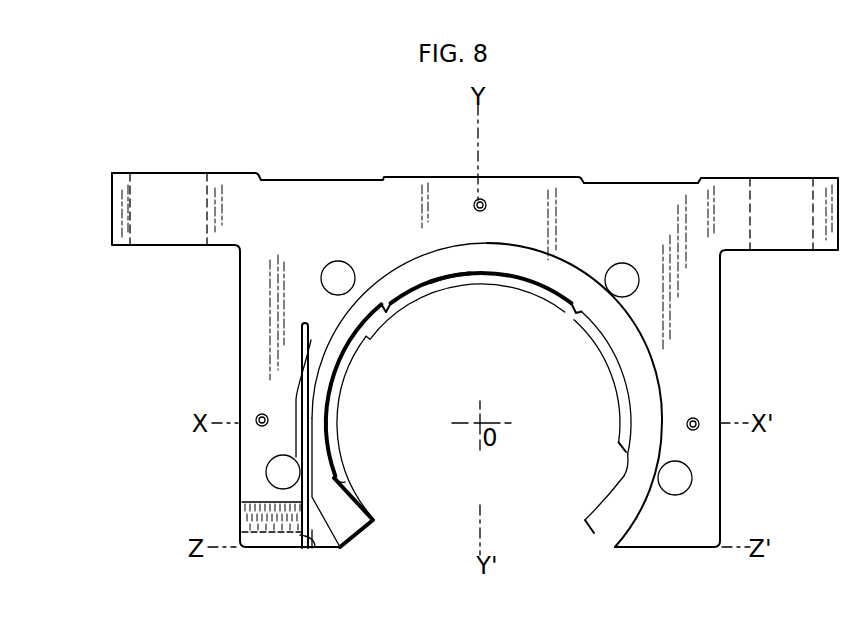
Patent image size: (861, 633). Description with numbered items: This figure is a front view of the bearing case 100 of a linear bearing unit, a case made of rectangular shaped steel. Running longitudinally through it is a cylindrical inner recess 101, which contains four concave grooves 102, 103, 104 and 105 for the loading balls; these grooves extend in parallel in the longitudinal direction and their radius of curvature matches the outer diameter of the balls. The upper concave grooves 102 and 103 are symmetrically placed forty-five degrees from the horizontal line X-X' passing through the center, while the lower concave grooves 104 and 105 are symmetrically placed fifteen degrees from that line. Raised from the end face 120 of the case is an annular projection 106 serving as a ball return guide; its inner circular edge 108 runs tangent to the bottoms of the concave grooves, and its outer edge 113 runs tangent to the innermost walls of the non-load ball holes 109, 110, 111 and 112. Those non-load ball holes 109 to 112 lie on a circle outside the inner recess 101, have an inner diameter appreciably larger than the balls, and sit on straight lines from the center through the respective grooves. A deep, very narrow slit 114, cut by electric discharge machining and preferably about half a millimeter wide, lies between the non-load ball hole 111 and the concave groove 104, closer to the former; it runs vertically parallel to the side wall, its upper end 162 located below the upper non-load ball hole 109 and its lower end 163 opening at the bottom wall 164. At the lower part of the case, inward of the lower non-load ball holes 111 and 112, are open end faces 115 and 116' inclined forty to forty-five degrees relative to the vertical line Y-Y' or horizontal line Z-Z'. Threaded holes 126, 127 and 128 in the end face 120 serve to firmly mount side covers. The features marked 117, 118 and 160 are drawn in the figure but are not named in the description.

The bearing case 100 is at (545, 170).
The cylindrical inner recess 101 is at (478, 291).
The concave groove 102 is at (388, 319).
The concave groove 103 is at (572, 316).
The concave groove 104 is at (346, 466).
The concave groove 105 is at (622, 451).
The annular projection 106 is at (640, 380).
The inner circular edge 108 is at (448, 272).
The non-load ball hole 109 is at (340, 276).
The non-load ball hole 110 is at (623, 282).
The non-load ball hole 111 is at (283, 472).
The non-load ball hole 112 is at (675, 490).
The outer edge of the annular projection 113 is at (397, 258).
The slit 114 is at (316, 541).
The open end face 115 is at (360, 530).
The open end face 116' is at (580, 519).
The flange portion 117 is at (222, 190).
The flange portion 118 is at (813, 195).
The end face 120 is at (628, 196).
The threaded hole 126 is at (482, 199).
The threaded hole 127 is at (259, 415).
The threaded hole 128 is at (693, 418).
The hatched region 160 is at (255, 549).
The upper end of the slit 162 is at (305, 322).
The lower end of the slit 163 is at (312, 548).
The bottom wall 164 is at (283, 548).